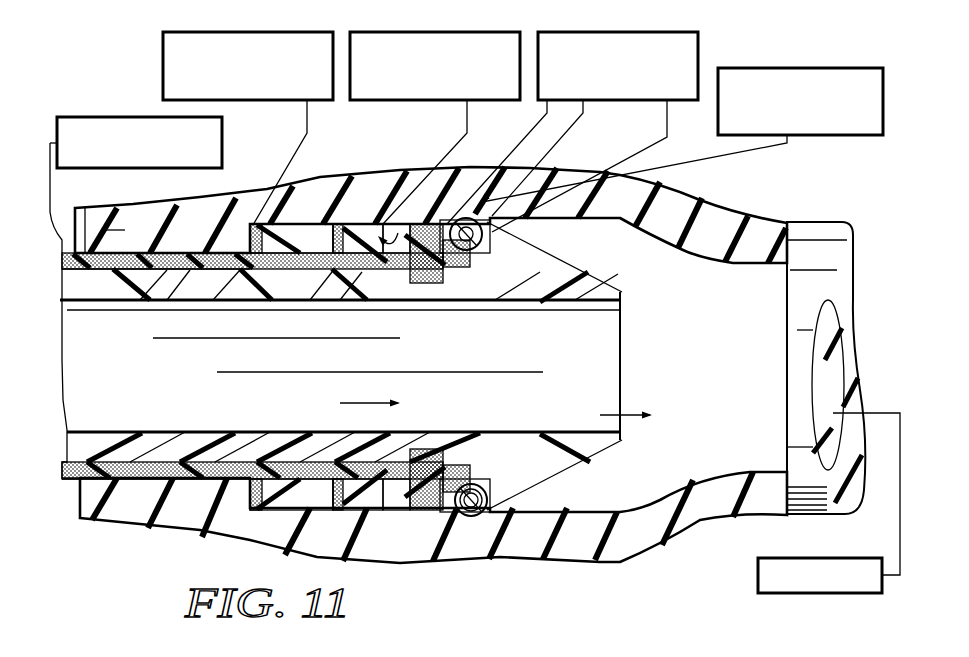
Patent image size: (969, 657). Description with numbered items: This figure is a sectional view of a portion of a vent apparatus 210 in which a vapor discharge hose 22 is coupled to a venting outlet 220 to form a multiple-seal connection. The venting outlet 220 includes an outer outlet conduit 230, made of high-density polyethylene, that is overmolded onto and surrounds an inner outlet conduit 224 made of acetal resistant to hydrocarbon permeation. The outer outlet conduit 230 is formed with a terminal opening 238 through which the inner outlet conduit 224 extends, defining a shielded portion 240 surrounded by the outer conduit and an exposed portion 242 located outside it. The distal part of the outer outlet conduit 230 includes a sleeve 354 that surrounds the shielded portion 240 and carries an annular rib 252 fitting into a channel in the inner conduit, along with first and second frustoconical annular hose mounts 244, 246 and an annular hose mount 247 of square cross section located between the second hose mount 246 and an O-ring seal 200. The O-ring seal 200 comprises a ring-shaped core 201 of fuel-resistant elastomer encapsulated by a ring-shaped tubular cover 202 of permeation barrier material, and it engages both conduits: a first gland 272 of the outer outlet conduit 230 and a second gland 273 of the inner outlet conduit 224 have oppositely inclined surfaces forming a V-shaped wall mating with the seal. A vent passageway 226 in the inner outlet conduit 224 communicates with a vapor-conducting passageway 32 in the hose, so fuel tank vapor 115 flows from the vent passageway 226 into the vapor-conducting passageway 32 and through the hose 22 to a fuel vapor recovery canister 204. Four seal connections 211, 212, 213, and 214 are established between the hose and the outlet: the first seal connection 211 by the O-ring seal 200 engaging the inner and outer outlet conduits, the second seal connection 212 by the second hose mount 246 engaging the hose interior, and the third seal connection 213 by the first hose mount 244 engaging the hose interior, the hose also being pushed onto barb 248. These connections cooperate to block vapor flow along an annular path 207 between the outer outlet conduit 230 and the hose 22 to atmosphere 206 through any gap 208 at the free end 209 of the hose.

The vapor discharge hose 22 is at (728, 204).
The vapor-conducting passageway 32 is at (659, 478).
The fuel tank vapor 115 is at (365, 403).
The O-ring seal 200 is at (488, 215).
The ring-shaped core 201 is at (480, 495).
The ring-shaped tubular cover 202 is at (497, 500).
The fuel vapor recovery canister 204 is at (835, 593).
The atmosphere 206 is at (83, 117).
The annular path 207 is at (384, 262).
The gap 208 is at (110, 243).
The free end 209 is at (203, 207).
The vent apparatus 210 is at (50, 278).
The first seal connection 211 is at (637, 103).
The second seal connection 212 is at (408, 100).
The third seal connection 213 is at (163, 72).
The fourth seal connection 214 is at (813, 67).
The venting outlet 220 is at (71, 488).
The inner outlet conduit 224 is at (163, 440).
The vent passageway 226 is at (160, 380).
The outer outlet conduit 230 is at (99, 280).
The terminal opening 238 is at (470, 256).
The shielded portion 240 is at (235, 272).
The exposed portion 242 is at (530, 292).
The first frustoconical annular hose mount 244 is at (258, 226).
The second frustoconical annular hose mount 246 is at (337, 226).
The annular hose mount 247 is at (398, 233).
The barb 248 is at (527, 247).
The annular rib 252 is at (430, 270).
The first gland 272 is at (460, 467).
The second gland 273 is at (470, 490).
The sleeve 354 is at (180, 258).